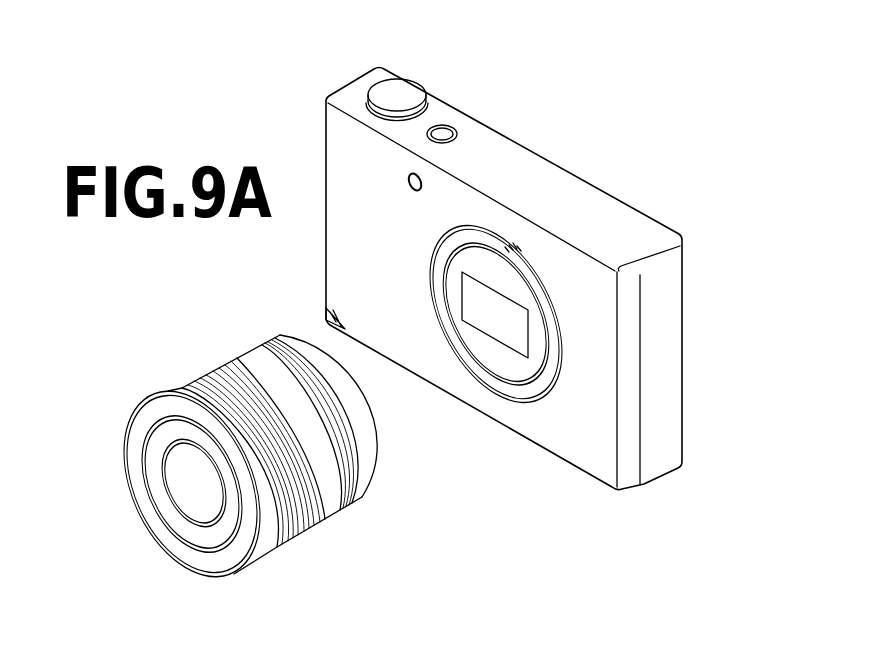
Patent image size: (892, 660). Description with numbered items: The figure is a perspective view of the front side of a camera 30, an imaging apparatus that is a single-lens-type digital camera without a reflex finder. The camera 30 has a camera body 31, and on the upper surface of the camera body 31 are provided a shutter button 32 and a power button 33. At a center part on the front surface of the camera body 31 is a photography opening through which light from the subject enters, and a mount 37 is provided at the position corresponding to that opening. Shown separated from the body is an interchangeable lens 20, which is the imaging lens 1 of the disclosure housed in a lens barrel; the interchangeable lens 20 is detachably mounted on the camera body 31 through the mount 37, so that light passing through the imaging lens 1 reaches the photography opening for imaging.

The imaging lens 1 is at (200, 505).
The interchangeable lens 20 is at (250, 476).
The camera 30 is at (536, 258).
The camera body 31 is at (674, 328).
The shutter button 32 is at (403, 86).
The power button 33 is at (445, 128).
The mount 37 is at (521, 378).